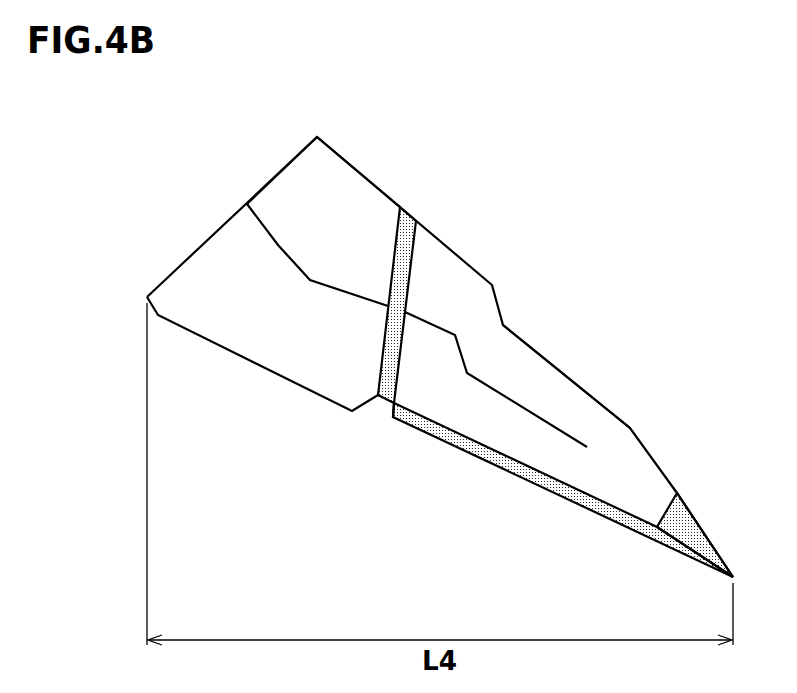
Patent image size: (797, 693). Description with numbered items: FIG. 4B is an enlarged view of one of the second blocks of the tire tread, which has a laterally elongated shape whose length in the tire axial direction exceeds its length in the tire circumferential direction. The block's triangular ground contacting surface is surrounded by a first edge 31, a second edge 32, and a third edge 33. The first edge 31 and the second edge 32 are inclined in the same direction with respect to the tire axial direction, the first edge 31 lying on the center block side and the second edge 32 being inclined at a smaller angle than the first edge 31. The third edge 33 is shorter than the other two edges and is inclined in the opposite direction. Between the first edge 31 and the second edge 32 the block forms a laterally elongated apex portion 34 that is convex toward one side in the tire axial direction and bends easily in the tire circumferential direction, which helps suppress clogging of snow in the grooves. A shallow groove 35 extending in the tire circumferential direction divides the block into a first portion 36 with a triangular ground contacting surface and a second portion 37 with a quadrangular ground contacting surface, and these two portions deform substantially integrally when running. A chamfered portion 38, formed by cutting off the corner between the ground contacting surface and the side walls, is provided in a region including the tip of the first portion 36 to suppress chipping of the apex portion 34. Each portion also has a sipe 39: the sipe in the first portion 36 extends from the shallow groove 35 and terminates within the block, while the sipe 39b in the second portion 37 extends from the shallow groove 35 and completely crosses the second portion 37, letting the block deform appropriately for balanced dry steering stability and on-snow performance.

The first edge 31 is at (475, 267).
The second edge 32 is at (313, 395).
The third edge 33 is at (205, 243).
The laterally elongated apex portion 34 is at (590, 437).
The shallow groove 35 is at (402, 280).
The first portion 36 is at (513, 388).
The second portion 37 is at (332, 227).
The chamfered portion 38 is at (688, 535).
The sipe 39 is at (523, 413).
The sipe 39b is at (278, 245).